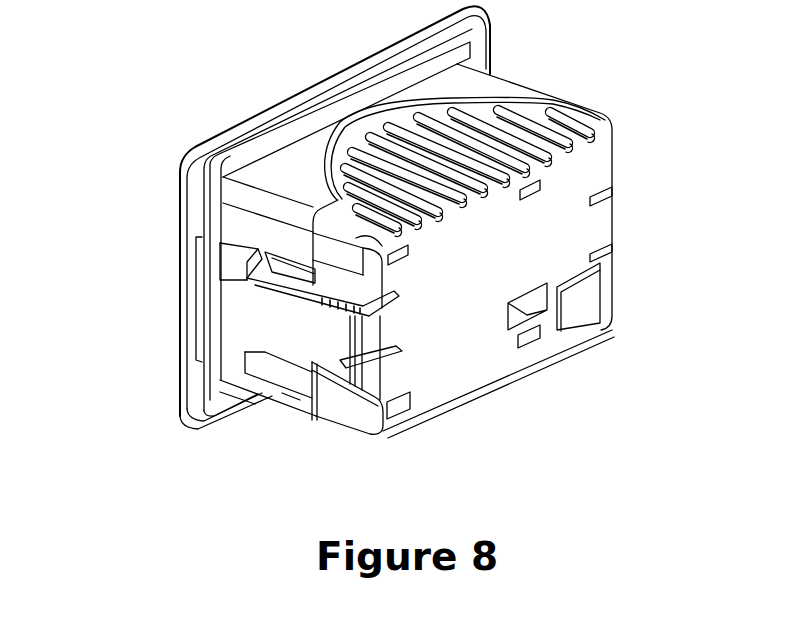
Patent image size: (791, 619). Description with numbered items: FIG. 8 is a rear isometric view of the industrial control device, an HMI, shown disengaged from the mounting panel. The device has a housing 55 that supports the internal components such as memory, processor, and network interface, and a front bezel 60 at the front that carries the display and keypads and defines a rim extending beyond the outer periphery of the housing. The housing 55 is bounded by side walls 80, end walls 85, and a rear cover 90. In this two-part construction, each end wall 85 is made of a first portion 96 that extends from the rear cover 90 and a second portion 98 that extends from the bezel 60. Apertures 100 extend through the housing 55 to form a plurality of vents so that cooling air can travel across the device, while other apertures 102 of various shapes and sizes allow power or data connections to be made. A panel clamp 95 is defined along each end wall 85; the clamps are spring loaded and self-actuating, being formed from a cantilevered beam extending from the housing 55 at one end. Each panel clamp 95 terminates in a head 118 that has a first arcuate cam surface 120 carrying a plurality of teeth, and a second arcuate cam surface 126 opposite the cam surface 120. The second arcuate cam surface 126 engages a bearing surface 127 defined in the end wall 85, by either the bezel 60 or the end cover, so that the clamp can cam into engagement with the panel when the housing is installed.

The front bezel 60 is at (349, 74).
The side walls 80 is at (278, 171).
The apertures 100 is at (517, 108).
The first arcuate cam surface 120 is at (224, 252).
The head 118 is at (222, 258).
The second arcuate cam surface 126 is at (230, 273).
The bearing surface 127 is at (247, 279).
The second portion 98 is at (262, 380).
The first portion 96 is at (330, 400).
The end walls 85 is at (290, 398).
The panel clamps 95 is at (317, 343).
The rear cover 90 is at (488, 362).
The housing 55 is at (453, 362).
The other apertures 102 is at (528, 315).